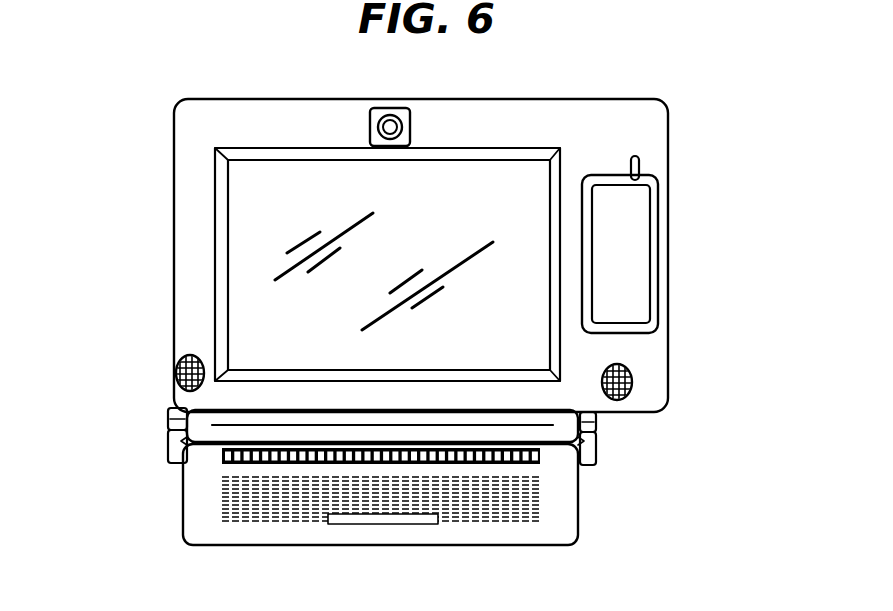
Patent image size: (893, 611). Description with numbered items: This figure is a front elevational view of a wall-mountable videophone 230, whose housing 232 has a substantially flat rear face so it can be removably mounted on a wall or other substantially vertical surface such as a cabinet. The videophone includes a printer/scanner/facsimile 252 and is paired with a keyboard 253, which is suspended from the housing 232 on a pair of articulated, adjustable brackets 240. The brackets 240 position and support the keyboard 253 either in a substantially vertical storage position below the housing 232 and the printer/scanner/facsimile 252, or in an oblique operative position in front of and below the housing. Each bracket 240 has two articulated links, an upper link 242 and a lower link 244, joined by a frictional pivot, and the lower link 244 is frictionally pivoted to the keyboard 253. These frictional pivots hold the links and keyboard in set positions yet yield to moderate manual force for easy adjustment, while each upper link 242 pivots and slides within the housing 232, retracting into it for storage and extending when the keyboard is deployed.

The videophone 230 is at (722, 199).
The housing 232 is at (192, 122).
The bracket 240 is at (134, 440).
The upper link 242 is at (172, 418).
The lower link 244 is at (172, 458).
The printer/scanner/facsimile 252 is at (472, 425).
The keyboard 253 is at (205, 525).